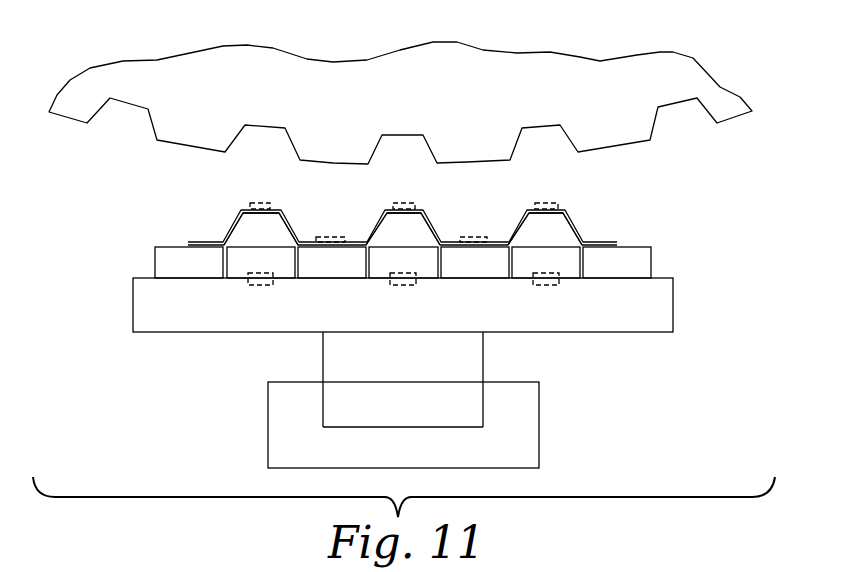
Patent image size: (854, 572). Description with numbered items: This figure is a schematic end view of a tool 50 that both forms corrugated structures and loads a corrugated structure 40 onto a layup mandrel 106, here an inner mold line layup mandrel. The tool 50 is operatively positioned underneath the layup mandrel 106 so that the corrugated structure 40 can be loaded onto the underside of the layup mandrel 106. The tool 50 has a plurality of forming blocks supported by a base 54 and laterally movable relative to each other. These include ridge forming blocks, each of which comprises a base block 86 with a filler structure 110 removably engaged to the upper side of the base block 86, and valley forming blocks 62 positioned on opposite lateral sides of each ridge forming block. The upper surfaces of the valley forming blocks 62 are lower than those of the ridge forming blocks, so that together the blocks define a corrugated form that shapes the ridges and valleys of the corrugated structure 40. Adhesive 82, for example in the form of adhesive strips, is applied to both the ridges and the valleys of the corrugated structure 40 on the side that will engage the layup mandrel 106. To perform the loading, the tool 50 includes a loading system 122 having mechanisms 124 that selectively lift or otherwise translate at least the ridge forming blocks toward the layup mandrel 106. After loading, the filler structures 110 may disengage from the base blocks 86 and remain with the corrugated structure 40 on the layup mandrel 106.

The layup mandrel 106 is at (662, 57).
The tool 50 is at (448, 222).
The corrugated structure 40 is at (577, 225).
The adhesive 82 is at (257, 203).
The filler structure 110 is at (279, 242).
The valley forming block 62 is at (202, 272).
The base block 86 is at (274, 272).
The base 54 is at (673, 303).
The mechanisms 124 is at (256, 285).
The loading system 122 is at (190, 314).